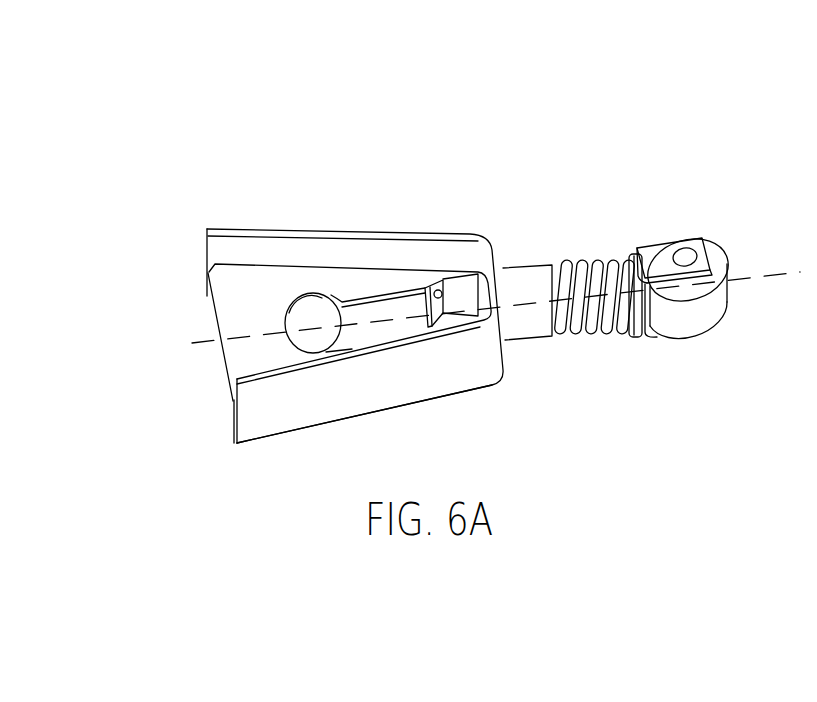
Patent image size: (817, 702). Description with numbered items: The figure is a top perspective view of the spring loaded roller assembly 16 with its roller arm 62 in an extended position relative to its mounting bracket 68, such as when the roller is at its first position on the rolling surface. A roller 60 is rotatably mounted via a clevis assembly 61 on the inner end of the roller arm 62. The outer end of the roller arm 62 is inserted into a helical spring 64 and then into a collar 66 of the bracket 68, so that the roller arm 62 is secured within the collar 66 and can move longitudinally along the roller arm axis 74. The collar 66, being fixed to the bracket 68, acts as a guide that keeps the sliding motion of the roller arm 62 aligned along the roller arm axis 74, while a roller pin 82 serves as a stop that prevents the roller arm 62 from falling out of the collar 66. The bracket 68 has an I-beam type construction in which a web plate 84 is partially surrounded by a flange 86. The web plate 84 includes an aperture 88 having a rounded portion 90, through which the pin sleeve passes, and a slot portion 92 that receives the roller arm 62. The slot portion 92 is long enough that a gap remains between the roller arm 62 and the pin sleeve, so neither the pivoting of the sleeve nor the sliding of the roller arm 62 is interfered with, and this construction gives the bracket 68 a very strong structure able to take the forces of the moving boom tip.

The spring loaded roller assembly 16 is at (515, 94).
The bracket 68 is at (277, 248).
The web plate 84 is at (228, 290).
The flange 86 is at (282, 412).
The aperture 88 is at (336, 341).
The rounded portion 90 is at (314, 338).
The slot portion 92 is at (398, 327).
The roller pin 82 is at (438, 290).
The collar 66 is at (467, 292).
The helical spring 64 is at (598, 262).
The roller arm 62 is at (437, 330).
The roller 60 is at (693, 320).
The clevis assembly 61 is at (657, 258).
The roller arm axis 74 is at (733, 278).